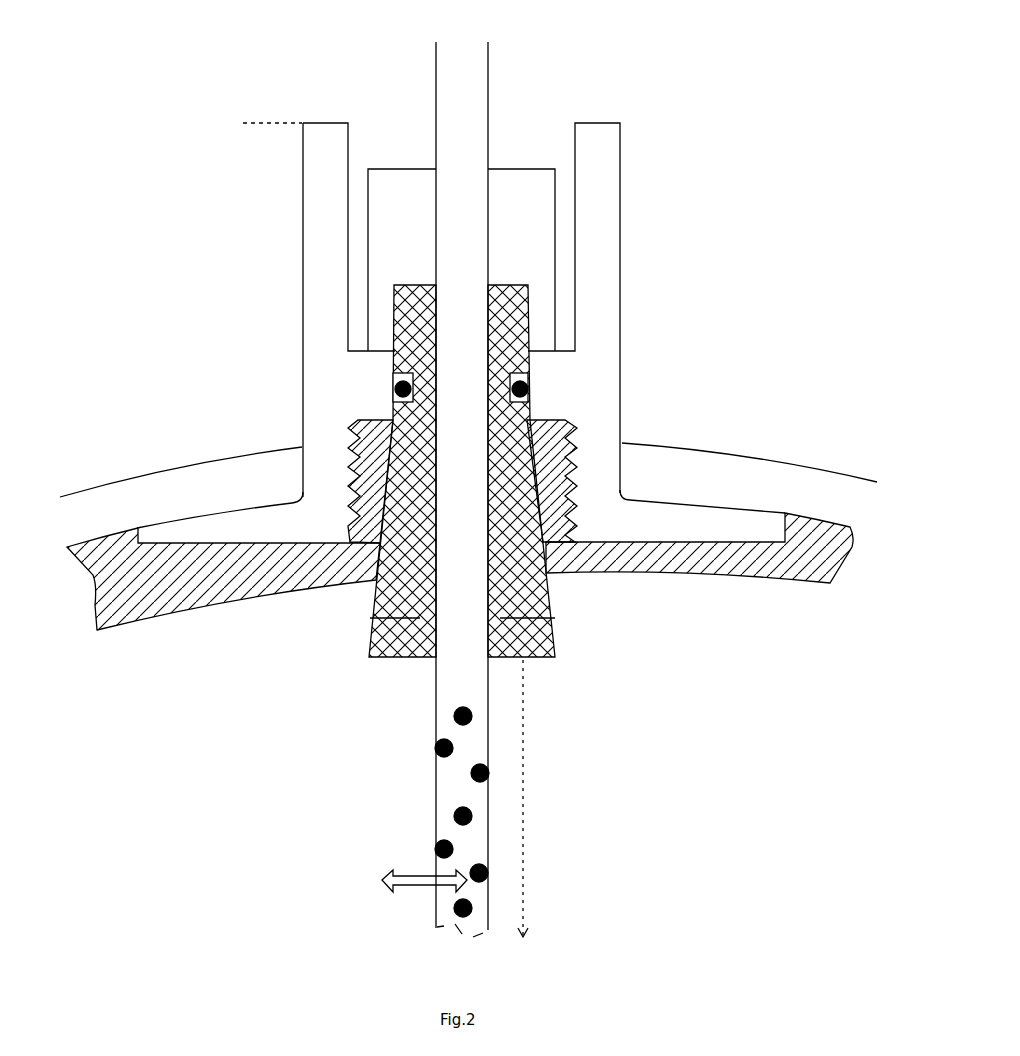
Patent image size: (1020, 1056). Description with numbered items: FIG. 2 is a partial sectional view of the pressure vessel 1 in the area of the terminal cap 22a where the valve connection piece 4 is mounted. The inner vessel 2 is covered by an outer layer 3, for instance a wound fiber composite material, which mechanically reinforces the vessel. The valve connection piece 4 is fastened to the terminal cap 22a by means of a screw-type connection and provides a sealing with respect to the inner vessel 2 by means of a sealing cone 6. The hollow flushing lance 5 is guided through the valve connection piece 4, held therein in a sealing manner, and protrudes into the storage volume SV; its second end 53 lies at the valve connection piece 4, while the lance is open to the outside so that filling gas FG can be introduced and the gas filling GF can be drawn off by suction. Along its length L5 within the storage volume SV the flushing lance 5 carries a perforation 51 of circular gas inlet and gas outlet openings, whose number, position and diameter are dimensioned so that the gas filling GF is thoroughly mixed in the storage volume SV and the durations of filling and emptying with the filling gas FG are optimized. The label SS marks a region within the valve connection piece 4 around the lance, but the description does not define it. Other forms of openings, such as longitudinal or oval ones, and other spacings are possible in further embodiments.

The pressure vessel 1 is at (162, 162).
The inner vessel 2 is at (168, 608).
The sealing terminal cap on the side of the valve connection piece 22a is at (787, 582).
The outer layer 3 is at (155, 500).
The valve connection piece 4 is at (598, 262).
The flushing lance 5 is at (452, 668).
The perforation 51 is at (465, 773).
The second end of flushing lance 53 is at (462, 45).
The sealing cone 6 is at (525, 593).
The sensor cavity SS is at (410, 197).
The length of flushing lance in the storage volume L5 is at (532, 788).
The storage volume SV is at (174, 831).
The filling gas FG is at (418, 916).
The gas filling GF is at (413, 892).